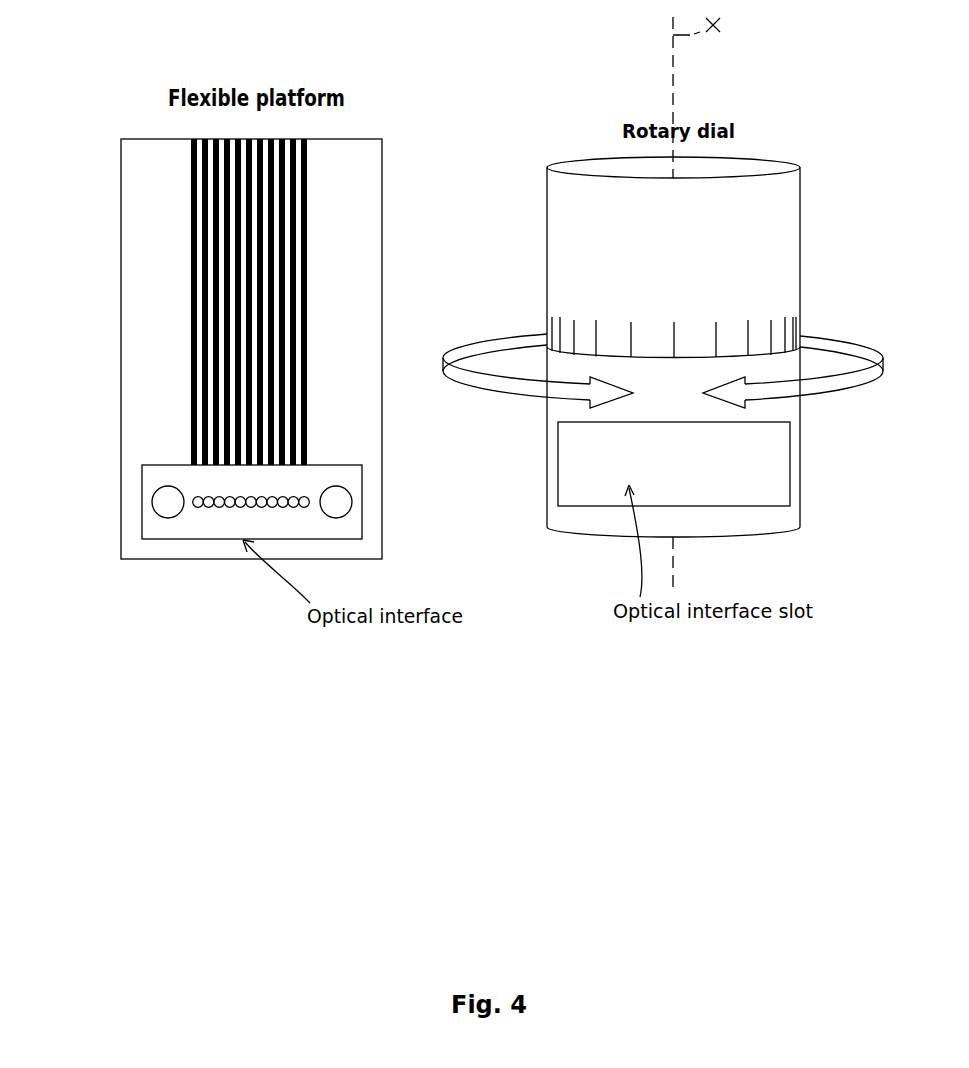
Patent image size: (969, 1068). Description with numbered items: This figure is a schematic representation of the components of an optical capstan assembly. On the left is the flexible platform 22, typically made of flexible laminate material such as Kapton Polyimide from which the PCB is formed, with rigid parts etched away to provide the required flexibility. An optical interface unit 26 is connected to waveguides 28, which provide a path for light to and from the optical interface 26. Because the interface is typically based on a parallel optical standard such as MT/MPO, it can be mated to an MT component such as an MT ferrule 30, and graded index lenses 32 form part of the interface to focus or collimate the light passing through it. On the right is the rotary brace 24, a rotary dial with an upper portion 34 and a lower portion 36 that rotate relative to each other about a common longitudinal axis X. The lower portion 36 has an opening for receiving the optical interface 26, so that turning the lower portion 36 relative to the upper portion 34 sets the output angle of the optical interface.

The flexible platform 22 is at (365, 198).
The rotary brace 24 is at (572, 136).
The optical interface unit 26 is at (152, 527).
The waveguides 28 is at (191, 218).
The MT ferrule 30 is at (150, 473).
The graded index (GRIN) lenses 32 is at (195, 504).
The upper portion 34 is at (788, 213).
The lower portion 36 is at (780, 517).